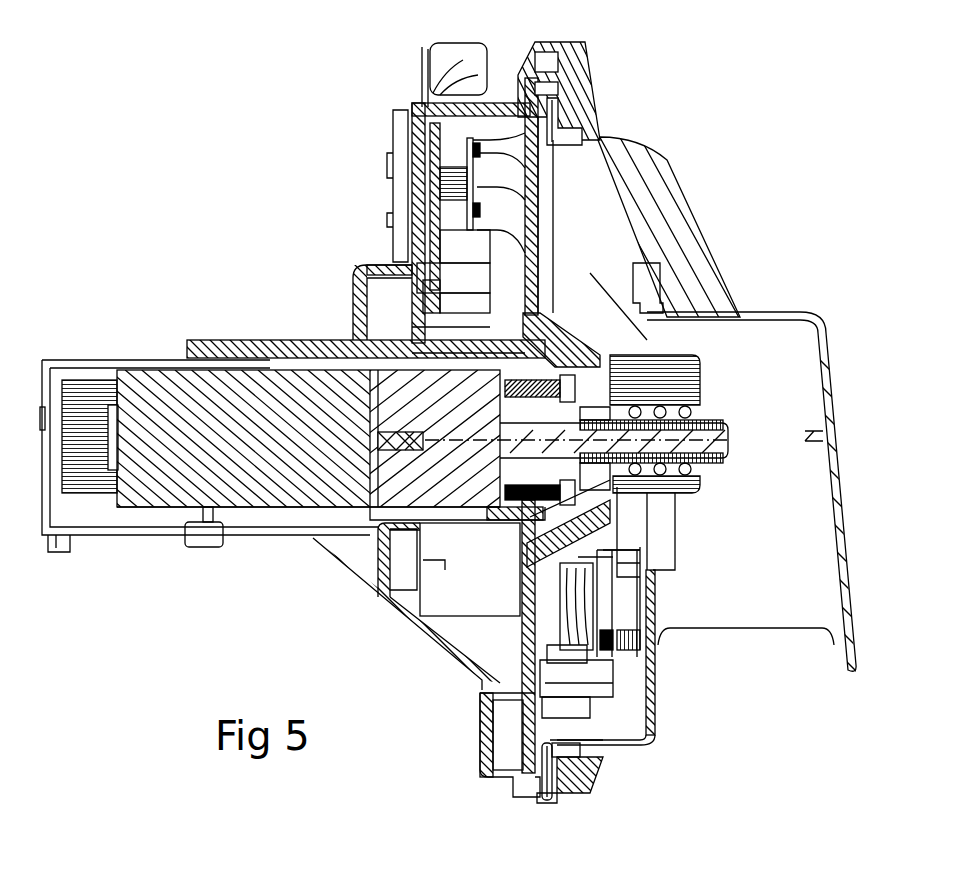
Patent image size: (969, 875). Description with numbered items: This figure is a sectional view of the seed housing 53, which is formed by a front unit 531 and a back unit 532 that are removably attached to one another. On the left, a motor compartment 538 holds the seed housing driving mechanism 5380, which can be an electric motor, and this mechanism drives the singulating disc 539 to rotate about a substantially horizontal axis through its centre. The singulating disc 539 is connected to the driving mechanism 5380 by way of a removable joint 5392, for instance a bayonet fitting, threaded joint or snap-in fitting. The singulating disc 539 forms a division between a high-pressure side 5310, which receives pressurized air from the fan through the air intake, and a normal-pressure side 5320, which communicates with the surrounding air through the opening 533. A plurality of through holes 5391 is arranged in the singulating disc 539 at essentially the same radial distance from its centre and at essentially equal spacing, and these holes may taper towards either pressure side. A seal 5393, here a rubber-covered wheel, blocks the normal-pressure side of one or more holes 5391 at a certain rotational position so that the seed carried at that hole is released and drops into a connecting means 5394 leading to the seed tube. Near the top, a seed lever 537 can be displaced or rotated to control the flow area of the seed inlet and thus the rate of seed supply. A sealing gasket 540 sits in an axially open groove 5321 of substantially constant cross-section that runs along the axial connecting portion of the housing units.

The seed housing 53 is at (294, 188).
The front unit 531 is at (500, 98).
The back unit 532 is at (643, 143).
The opening 533 is at (749, 627).
The seed lever 537 is at (420, 98).
The motor compartment 538 is at (103, 365).
The singulating disc 539 is at (568, 142).
The sealing gasket 540 is at (556, 100).
The high-pressure side 5310 is at (467, 628).
The normal-pressure side 5320 is at (593, 230).
The axially open groove 5321 is at (595, 765).
The seed housing driving mechanism 5380 is at (180, 378).
The through holes 5391 is at (523, 193).
The removable joint 5392 is at (657, 405).
The seal 5393 is at (592, 688).
The connecting means 5394 is at (505, 730).